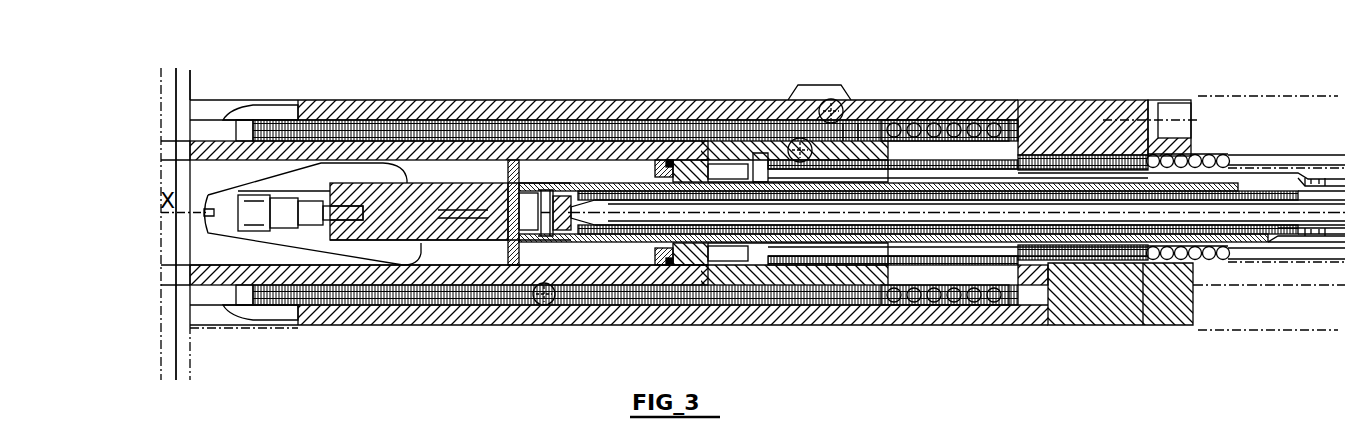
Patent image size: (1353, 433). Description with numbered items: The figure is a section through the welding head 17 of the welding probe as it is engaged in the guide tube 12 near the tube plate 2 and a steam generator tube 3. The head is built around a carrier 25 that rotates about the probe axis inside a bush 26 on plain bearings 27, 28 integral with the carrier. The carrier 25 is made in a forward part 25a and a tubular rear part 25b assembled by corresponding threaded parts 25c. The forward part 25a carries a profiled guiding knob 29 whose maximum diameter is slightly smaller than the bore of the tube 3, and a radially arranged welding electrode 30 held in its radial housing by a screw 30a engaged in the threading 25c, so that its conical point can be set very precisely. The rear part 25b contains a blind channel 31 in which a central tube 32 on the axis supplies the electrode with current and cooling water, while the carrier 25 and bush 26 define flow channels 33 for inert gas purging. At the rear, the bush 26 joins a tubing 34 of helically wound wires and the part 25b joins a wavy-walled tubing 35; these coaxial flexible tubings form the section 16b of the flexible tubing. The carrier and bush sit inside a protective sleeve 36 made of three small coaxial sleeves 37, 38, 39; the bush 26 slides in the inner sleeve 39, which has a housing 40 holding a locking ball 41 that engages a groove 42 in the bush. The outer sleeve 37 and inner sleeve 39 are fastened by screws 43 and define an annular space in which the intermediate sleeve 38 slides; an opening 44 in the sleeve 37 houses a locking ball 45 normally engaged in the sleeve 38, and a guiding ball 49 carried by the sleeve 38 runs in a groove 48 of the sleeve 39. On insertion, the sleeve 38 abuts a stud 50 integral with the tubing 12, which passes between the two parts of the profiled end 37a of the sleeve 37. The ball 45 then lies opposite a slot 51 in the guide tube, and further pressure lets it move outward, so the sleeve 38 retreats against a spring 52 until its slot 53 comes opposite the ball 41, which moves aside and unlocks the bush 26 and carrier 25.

The tube plate 2 is at (160, 118).
The steam generator tube 3 is at (164, 172).
The guide tube 12 is at (200, 322).
The flexible tubing section 16b is at (1281, 130).
The welding head 17 is at (478, 332).
The carrier 25 is at (464, 200).
The forward part of the carrier 25a is at (448, 234).
The rear part of the carrier 25b is at (834, 236).
The threaded parts 25c is at (586, 176).
The bush 26 is at (968, 158).
The plain bearing 27 is at (752, 165).
The plain bearing 28 is at (1112, 185).
The guiding knob 29 is at (338, 240).
The welding electrode 30 is at (507, 200).
The screw 30a is at (504, 252).
The blind channel 31 is at (1043, 220).
The central tube 32 is at (952, 296).
The flow channels 33 is at (656, 152).
The tubing 34 is at (1196, 146).
The tubing 35 is at (1298, 240).
The protective sleeve 36 is at (794, 330).
The outer small sleeve 37 is at (386, 110).
The profiled end of the small sleeve 37a is at (272, 108).
The intermediate small sliding sleeve 38 is at (418, 126).
The inner small sleeve 39 is at (430, 145).
The housing 40 is at (852, 150).
The locking ball 41 is at (795, 138).
The groove 42 is at (770, 258).
The screw 43 is at (1156, 110).
The opening 44 is at (840, 128).
The locking ball 45 is at (826, 100).
The groove 48 is at (585, 302).
The guiding ball 49 is at (540, 298).
The stud 50 is at (234, 120).
The slot 51 is at (801, 80).
The spring 52 is at (934, 118).
The slot 53 is at (718, 156).